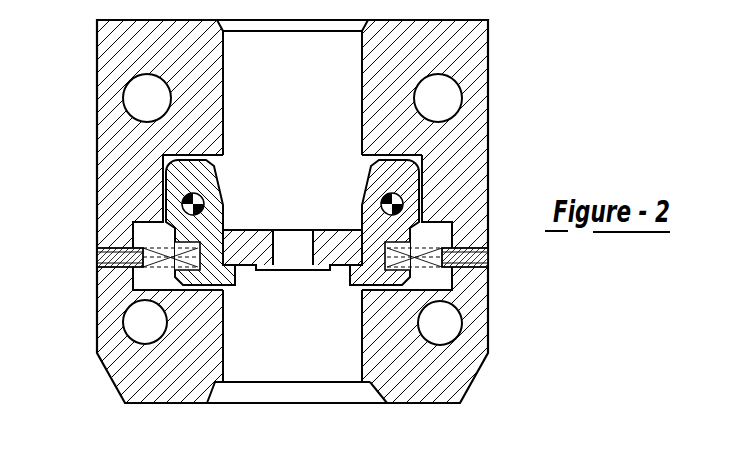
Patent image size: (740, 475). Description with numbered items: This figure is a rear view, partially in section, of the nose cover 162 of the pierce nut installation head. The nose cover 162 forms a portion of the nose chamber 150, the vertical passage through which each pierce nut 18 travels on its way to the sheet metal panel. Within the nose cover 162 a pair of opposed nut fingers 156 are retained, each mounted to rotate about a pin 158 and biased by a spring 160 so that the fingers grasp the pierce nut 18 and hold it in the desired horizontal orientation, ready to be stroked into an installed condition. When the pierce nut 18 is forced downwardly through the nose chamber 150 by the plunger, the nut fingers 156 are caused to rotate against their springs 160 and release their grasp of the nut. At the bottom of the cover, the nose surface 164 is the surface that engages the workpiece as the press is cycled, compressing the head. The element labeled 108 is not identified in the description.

The pierce nut 18 is at (250, 230).
The base 108 is at (436, 439).
The nose chamber 150 is at (223, 320).
The nut fingers 156 is at (166, 203).
The pins 158 is at (183, 201).
The springs 160 is at (146, 265).
The nose cover 162 is at (488, 124).
The nose surface 164 is at (433, 404).